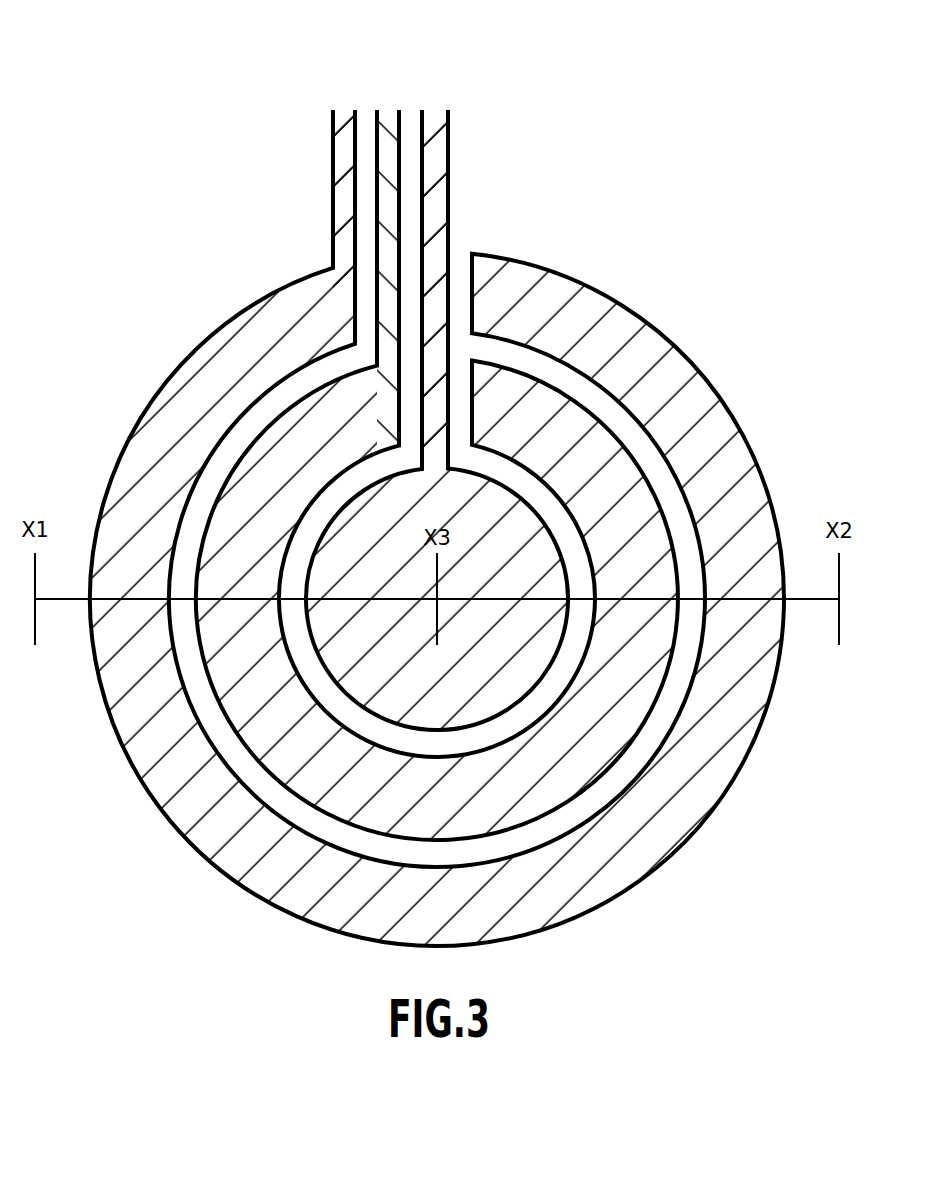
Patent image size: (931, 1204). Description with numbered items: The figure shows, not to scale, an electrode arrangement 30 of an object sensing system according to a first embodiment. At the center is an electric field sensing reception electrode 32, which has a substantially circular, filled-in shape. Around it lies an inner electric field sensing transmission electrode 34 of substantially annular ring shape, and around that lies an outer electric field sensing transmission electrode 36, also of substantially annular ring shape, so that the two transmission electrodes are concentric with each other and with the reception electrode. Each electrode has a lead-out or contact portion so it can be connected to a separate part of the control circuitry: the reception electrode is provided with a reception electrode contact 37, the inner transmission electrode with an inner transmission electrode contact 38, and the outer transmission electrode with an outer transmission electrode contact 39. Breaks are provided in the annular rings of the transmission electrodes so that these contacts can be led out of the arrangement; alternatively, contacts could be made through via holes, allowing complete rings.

The electrode arrangement 30 is at (445, 489).
The electric field sensing reception electrode 32 is at (465, 687).
The inner electric field sensing transmission electrode 34 is at (580, 750).
The outer electric field sensing transmission electrode 36 is at (740, 718).
The reception electrode contact 37 is at (387, 118).
The inner transmission electrode contact 38 is at (343, 148).
The outer transmission electrode contact 39 is at (437, 148).